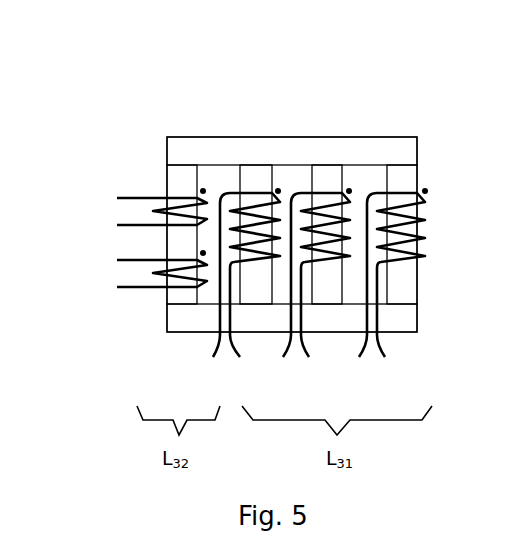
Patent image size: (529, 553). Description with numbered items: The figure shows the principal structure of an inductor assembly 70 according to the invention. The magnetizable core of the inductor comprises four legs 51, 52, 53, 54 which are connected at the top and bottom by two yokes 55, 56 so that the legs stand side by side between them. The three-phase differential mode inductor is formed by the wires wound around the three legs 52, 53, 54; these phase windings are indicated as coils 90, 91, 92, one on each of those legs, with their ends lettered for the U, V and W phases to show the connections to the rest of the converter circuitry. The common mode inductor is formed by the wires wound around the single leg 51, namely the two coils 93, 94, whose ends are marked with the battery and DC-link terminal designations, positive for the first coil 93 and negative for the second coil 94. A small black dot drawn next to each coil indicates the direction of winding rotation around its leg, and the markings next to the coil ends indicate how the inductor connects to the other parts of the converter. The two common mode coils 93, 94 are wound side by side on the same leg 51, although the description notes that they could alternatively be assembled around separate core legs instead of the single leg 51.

The inductor arrangement 70 is at (420, 63).
The leg 51 is at (182, 173).
The leg 52 is at (252, 173).
The leg 53 is at (327, 173).
The leg 54 is at (402, 173).
The yoke 55 is at (408, 150).
The yoke 56 is at (408, 317).
The first phase winding (U) 90 is at (232, 192).
The second phase winding (V) 91 is at (302, 192).
The third phase winding (W) 92 is at (378, 192).
The coil 93 is at (132, 195).
The coil 94 is at (136, 292).